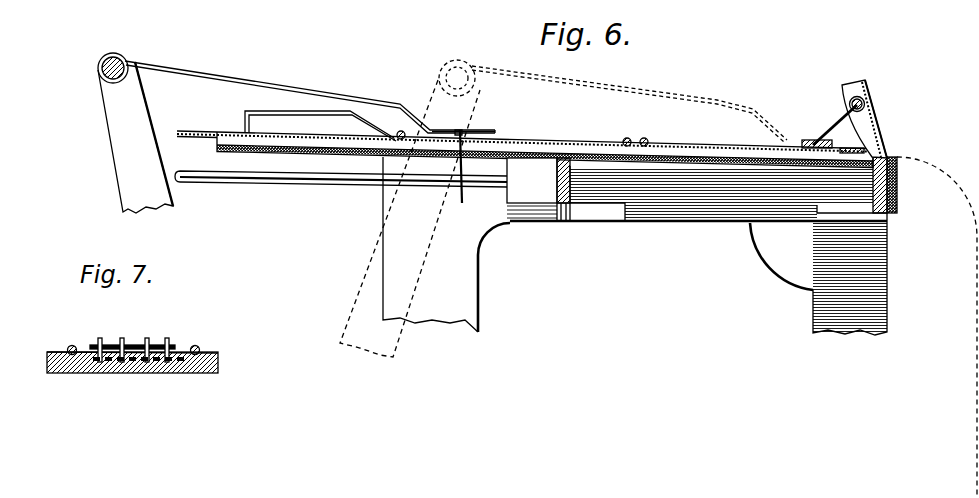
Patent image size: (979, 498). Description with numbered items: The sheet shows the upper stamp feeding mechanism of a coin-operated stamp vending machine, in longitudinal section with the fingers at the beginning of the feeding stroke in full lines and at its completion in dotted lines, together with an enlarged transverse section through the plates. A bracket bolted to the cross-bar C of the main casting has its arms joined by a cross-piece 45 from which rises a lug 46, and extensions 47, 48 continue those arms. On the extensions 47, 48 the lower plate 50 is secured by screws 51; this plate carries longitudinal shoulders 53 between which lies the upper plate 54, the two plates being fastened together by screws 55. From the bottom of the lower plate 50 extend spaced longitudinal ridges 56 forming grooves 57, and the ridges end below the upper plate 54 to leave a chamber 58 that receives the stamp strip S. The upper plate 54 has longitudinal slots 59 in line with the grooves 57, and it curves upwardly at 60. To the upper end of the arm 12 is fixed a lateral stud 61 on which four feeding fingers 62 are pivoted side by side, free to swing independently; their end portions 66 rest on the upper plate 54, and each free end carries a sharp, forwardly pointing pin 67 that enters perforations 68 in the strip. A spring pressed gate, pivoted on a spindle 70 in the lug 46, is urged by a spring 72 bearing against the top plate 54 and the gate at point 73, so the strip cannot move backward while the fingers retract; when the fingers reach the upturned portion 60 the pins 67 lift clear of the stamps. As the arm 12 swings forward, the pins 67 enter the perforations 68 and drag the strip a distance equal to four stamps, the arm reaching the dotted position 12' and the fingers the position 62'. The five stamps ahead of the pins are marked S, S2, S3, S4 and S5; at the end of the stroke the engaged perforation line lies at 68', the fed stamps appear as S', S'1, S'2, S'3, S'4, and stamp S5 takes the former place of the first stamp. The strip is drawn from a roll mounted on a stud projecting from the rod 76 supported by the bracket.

In FIG. 6, the arm 12 is at (112, 137).
In FIG. 6, the arm in foremost position 12' is at (390, 218).
In FIG. 6, the cross-piece 45 is at (667, 193).
In FIG. 6, the lug 46 is at (850, 104).
In FIG. 6, the extension 47 is at (563, 221).
In FIG. 6, the extension 48 is at (897, 178).
In FIG. 6, the lower plate 50 is at (693, 157).
In FIG. 7, the lower plate 50 is at (200, 373).
In FIG. 6, the screws 51 is at (646, 138).
In FIG. 7, the longitudinal shoulders 53 is at (47, 362).
In FIG. 6, the upper plate 54 is at (543, 140).
In FIG. 7, the upper plate 54 is at (183, 348).
In FIG. 6, the screws or fastening devices 55 is at (401, 131).
In FIG. 7, the screws or fastening devices 55 is at (73, 347).
In FIG. 7, the longitudinal ridges 56 is at (113, 373).
In FIG. 6, the grooves 57 is at (290, 149).
In FIG. 7, the grooves 57 is at (132, 373).
In FIG. 7, the recess or chamber 58 is at (197, 361).
In FIG. 7, the longitudinal slots 59 is at (147, 347).
In FIG. 6, the upwardly curved portion 60 is at (367, 118).
In FIG. 6, the lateral stud 61 is at (98, 64).
In FIG. 6, the feeding fingers 62 is at (310, 86).
In FIG. 7, the feeding fingers 62 is at (156, 318).
In FIG. 6, the feeding fingers in completed position 62' is at (613, 87).
In FIG. 6, the end portions 66 is at (490, 130).
In FIG. 6, the pin 67 is at (457, 130).
In FIG. 7, the pin 67 is at (100, 342).
In FIG. 6, the perforations 68 is at (544, 175).
In FIG. 6, the perforation line at end of feed 68' is at (782, 217).
In FIG. 6, the spindle 70 is at (868, 96).
In FIG. 6, the spring 72 is at (832, 128).
In FIG. 6, the bearing point 73 is at (877, 128).
In FIG. 6, the rod 76 is at (273, 178).
In FIG. 6, the cross-bar C is at (687, 212).
In FIG. 6, the stamp strip S is at (530, 126).
In FIG. 7, the stamp strip S is at (133, 329).
In FIG. 6, the stamp S2 is at (749, 151).
In FIG. 6, the stamp S3 is at (657, 150).
In FIG. 6, the stamp S4 is at (596, 146).
In FIG. 6, the stamp S5 is at (517, 130).
In FIG. 6, the forwardly fed stamps S' is at (900, 130).
In FIG. 6, the forwardly fed stamp S'1 is at (941, 437).
In FIG. 6, the forwardly fed stamp S'2 is at (946, 357).
In FIG. 6, the forwardly fed stamp S'3 is at (931, 270).
In FIG. 6, the forwardly fed stamp S'4 is at (931, 215).